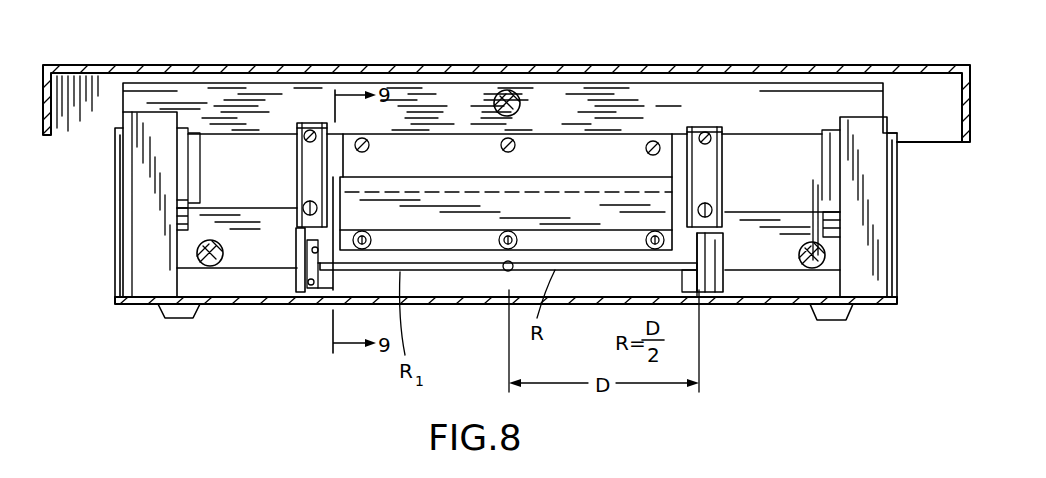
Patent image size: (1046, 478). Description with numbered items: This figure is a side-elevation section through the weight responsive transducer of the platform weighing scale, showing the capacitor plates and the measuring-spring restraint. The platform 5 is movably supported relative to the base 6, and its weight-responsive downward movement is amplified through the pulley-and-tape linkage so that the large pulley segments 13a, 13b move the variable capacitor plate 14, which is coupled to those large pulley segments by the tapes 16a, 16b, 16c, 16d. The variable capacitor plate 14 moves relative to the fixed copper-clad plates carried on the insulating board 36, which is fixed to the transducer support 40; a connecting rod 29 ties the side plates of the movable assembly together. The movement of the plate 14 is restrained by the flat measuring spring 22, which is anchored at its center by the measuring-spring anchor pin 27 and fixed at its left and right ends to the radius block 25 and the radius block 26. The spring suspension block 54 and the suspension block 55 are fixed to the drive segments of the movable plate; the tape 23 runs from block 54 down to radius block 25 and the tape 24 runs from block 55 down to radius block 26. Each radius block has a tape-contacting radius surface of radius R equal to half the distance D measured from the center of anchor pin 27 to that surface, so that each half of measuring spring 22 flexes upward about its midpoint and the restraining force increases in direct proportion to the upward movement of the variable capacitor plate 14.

The platform 5 is at (148, 65).
The base 6 is at (805, 310).
The large pulley segment 13a is at (300, 130).
The large pulley segment 13b is at (690, 145).
The variable capacitor plate 14 is at (596, 190).
The tape 16a is at (305, 123).
The tape 16b is at (722, 140).
The tape 16c is at (297, 190).
The tape 16d is at (722, 182).
The flat measuring spring 22 is at (455, 270).
The tape 23 is at (310, 290).
The tape 24 is at (700, 292).
The radius block 25 is at (318, 298).
The radius block 26 is at (682, 283).
The measuring-spring anchor pin 27 is at (506, 272).
The connecting rod 29 is at (507, 90).
The insulating board 36 is at (420, 150).
The transducer support 40 is at (580, 297).
The spring suspension block 54 is at (300, 262).
The suspension block 55 is at (722, 252).